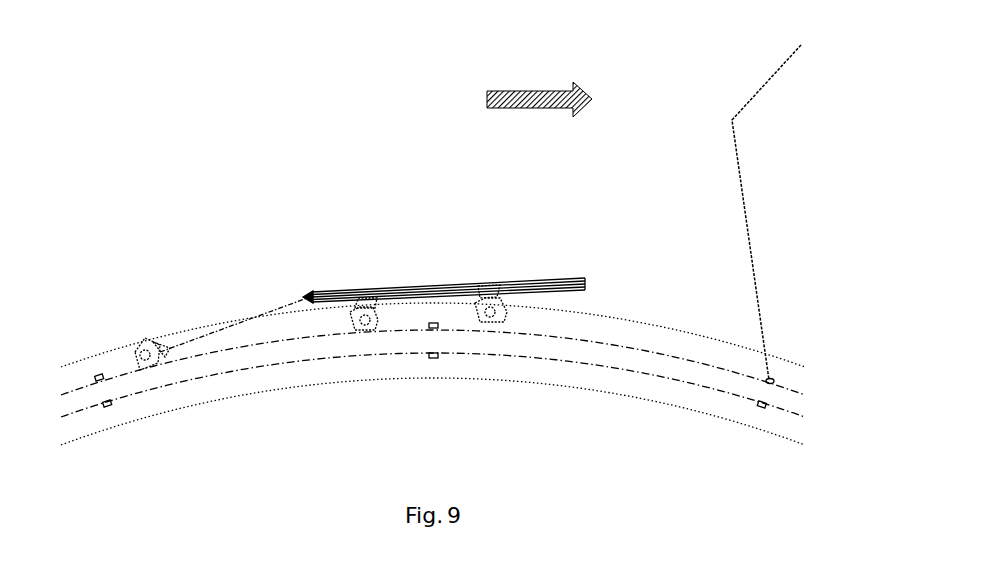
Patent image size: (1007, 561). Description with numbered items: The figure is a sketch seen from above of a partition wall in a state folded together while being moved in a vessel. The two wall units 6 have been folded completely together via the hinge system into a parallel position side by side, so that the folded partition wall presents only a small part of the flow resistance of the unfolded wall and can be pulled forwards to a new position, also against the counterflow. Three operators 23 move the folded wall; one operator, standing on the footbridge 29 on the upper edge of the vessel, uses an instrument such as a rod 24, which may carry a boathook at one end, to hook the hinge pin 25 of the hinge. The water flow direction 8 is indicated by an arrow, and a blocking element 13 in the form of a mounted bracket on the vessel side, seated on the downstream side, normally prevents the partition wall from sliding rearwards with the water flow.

The wall unit 6 is at (550, 288).
The flow direction 8 is at (542, 97).
The blocking element 13 is at (774, 381).
The operator 23 is at (137, 352).
The rod 24 is at (241, 325).
The hinge pin 25 is at (307, 298).
The footbridge 29 is at (170, 339).